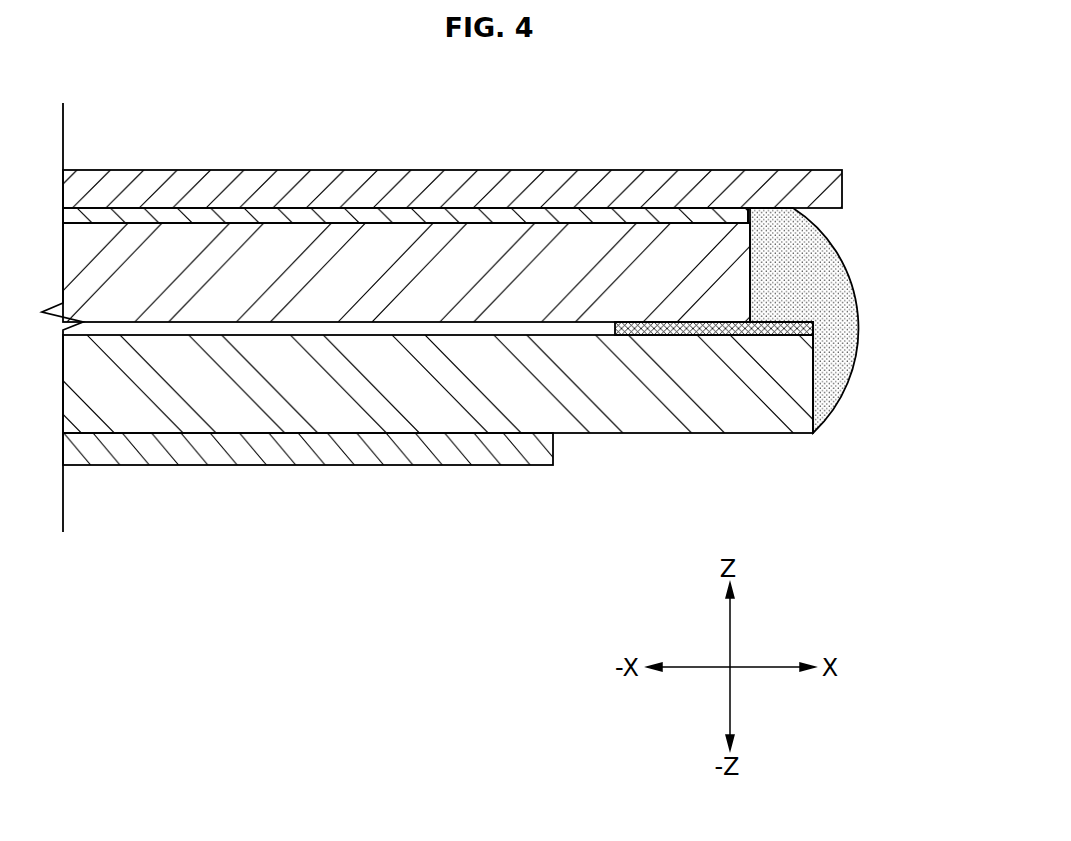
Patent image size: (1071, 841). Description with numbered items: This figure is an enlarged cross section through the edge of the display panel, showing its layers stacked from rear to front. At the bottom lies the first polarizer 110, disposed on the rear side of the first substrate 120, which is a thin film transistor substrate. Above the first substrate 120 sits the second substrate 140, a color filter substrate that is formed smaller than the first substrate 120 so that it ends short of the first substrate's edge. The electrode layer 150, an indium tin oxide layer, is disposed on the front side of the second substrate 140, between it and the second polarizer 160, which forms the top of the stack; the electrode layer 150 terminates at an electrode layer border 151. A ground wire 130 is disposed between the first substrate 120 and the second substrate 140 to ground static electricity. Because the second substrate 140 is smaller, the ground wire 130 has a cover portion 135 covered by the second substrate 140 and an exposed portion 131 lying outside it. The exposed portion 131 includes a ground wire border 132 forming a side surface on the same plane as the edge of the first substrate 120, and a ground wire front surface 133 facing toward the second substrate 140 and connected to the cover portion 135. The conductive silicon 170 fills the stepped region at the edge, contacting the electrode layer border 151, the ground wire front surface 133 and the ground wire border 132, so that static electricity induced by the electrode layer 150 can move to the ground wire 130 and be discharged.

The first polarizer 110 is at (440, 447).
The first substrate 120 is at (320, 397).
The ground wire 130 is at (822, 341).
The exposed portion 131 is at (802, 318).
The ground wire border 132 is at (808, 327).
The ground wire front surface 133 is at (773, 318).
The cover portion 135 is at (640, 320).
The second substrate 140 is at (207, 258).
The electrode layer 150 is at (330, 218).
The electrode layer border 151 is at (762, 215).
The second polarizer 160 is at (432, 190).
The conductive silicon 170 is at (810, 239).